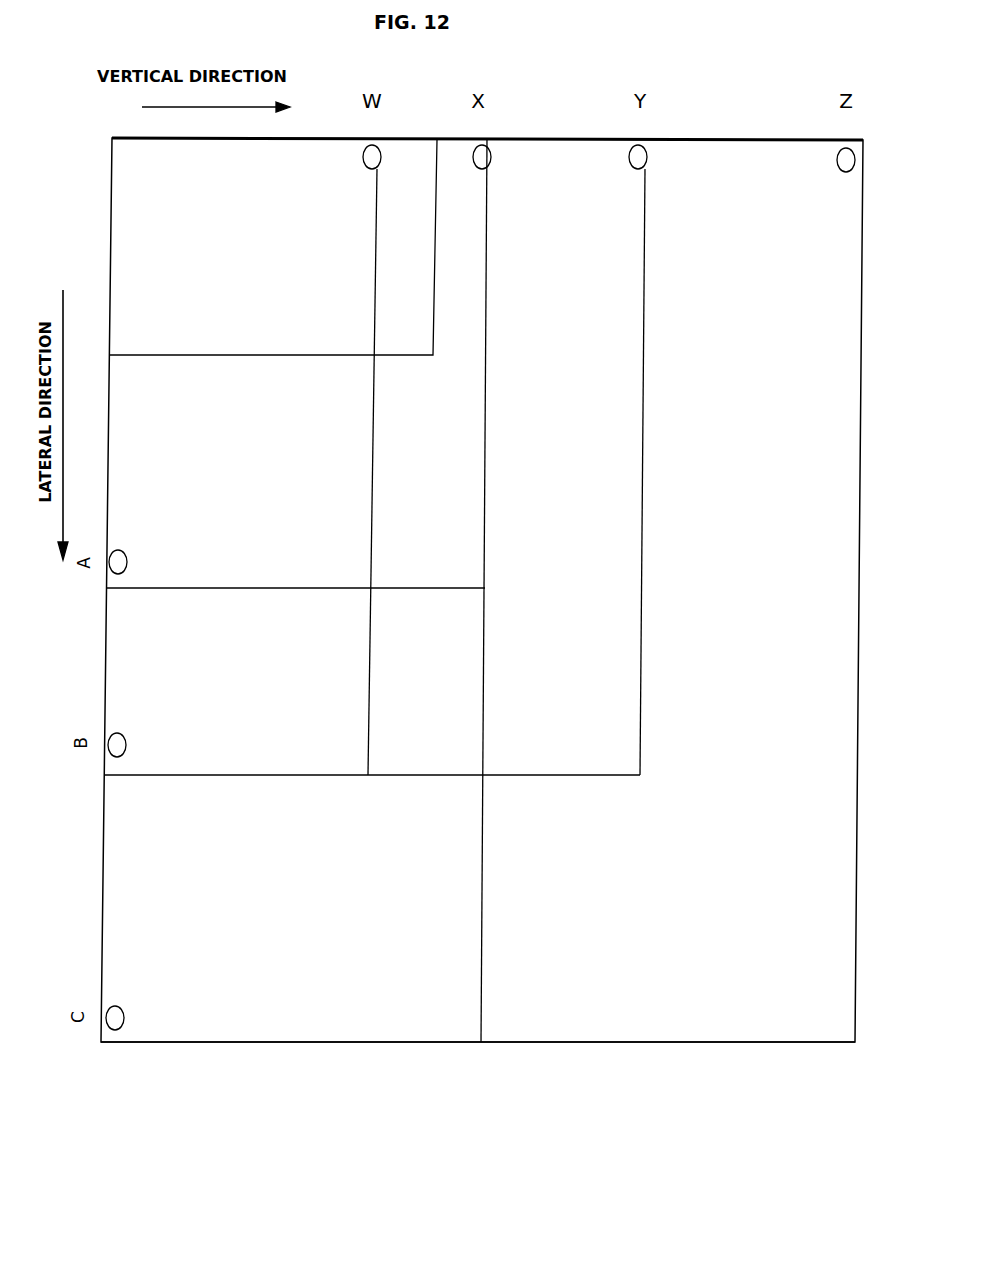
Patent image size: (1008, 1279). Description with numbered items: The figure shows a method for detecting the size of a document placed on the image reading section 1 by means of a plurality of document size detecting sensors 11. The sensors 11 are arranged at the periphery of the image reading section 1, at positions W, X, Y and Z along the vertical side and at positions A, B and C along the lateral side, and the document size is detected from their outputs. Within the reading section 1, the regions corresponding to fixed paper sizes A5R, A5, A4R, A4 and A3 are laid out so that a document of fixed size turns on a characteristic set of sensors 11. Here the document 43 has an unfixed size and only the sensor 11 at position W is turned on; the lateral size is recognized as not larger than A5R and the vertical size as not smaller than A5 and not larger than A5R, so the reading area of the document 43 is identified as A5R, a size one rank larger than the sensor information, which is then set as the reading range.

The image reading section 1 is at (552, 160).
The document size detecting sensor 11 is at (482, 158).
The document 43 is at (400, 282).
The A5R size area A5R is at (460, 487).
The A5 size area A5 is at (307, 722).
The A4R size area A4R is at (612, 750).
The A4 size area A4 is at (383, 1020).
The A3 size area A3 is at (675, 1022).